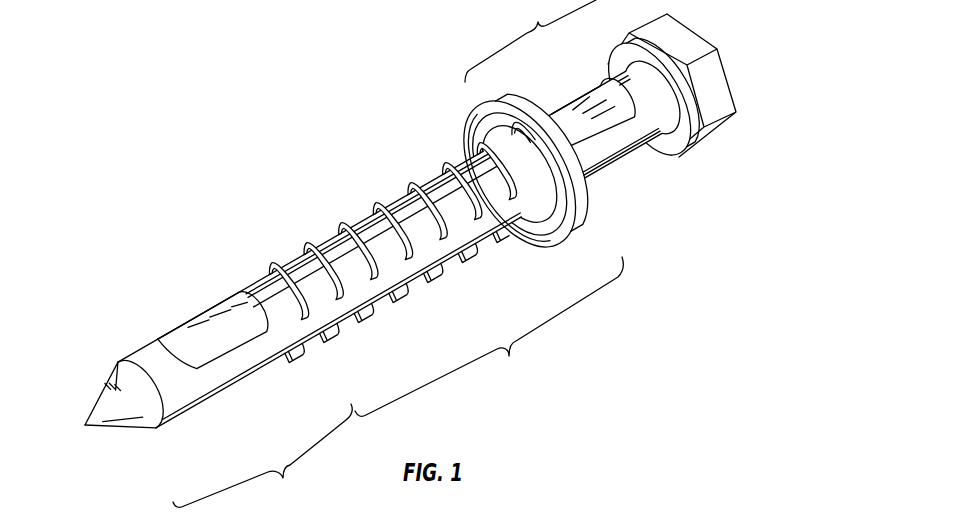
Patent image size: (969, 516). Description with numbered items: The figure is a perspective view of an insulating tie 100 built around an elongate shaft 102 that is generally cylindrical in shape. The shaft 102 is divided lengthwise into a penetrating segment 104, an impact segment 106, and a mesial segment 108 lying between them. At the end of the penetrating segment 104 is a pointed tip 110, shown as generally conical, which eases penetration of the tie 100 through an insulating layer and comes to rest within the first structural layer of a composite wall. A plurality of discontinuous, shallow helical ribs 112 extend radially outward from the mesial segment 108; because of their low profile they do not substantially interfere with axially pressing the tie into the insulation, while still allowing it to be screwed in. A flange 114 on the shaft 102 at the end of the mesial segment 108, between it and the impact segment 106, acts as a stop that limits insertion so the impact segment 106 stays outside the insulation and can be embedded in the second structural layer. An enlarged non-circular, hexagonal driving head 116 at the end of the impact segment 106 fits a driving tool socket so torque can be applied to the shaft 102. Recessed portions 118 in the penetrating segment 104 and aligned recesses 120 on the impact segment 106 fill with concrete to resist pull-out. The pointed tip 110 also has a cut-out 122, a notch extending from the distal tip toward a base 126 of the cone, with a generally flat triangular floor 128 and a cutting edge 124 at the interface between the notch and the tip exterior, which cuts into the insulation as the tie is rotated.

The tie 100 is at (372, 52).
The elongate shaft 102 is at (592, 150).
The penetrating segment 104 is at (262, 455).
The impact segment 106 is at (530, 41).
The mesial segment 108 is at (370, 288).
The pointed tip 110 is at (88, 366).
The helical ribs 112 is at (347, 228).
The flange 114 is at (490, 122).
The driving head 116 is at (682, 40).
The recessed portions 118 is at (228, 312).
The recesses 120 is at (593, 96).
The cut-out 122 is at (100, 402).
The cutting edge 124 is at (132, 412).
The base 126 is at (117, 362).
The floor 128 is at (158, 343).